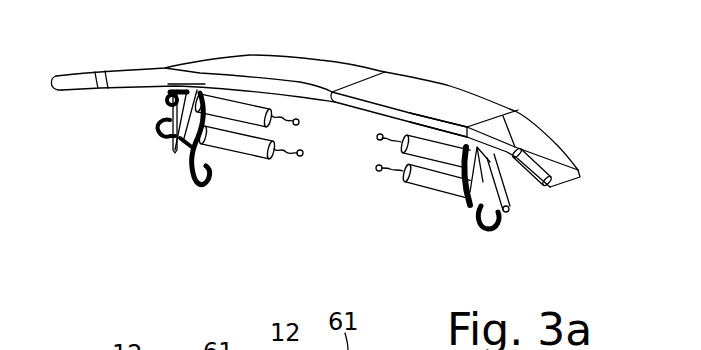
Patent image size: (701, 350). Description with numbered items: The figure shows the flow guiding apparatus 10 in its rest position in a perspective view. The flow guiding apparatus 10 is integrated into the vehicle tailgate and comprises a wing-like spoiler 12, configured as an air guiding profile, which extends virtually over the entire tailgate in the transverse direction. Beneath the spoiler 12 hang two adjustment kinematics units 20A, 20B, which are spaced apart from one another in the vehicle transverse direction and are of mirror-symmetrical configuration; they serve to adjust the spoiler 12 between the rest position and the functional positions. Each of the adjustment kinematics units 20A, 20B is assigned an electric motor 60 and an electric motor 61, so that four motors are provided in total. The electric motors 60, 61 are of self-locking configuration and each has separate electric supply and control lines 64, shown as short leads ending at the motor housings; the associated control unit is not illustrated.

The flow guiding apparatus 10 is at (533, 107).
The spoiler 12 is at (448, 108).
The adjustment kinematics unit 20A is at (516, 216).
The adjustment kinematics unit 20B is at (138, 154).
The electric motor 60 is at (233, 149).
The electric motor 61 is at (220, 107).
The supply and control lines 64 is at (298, 158).